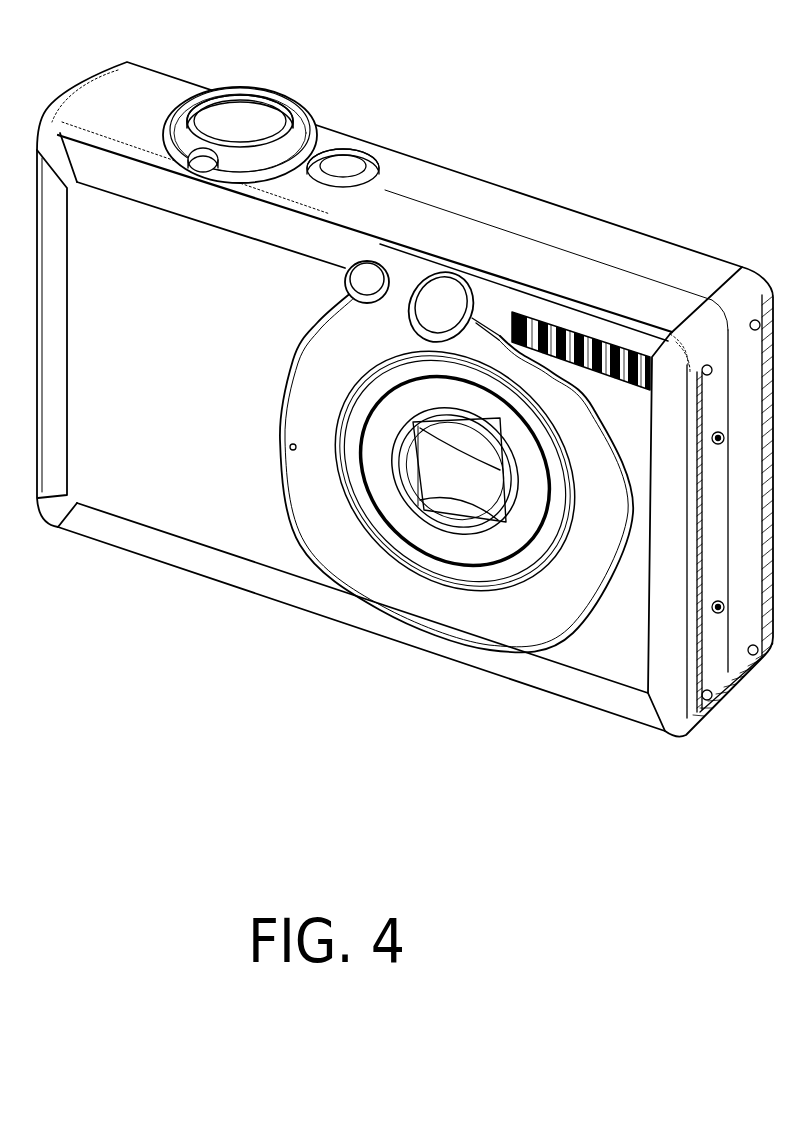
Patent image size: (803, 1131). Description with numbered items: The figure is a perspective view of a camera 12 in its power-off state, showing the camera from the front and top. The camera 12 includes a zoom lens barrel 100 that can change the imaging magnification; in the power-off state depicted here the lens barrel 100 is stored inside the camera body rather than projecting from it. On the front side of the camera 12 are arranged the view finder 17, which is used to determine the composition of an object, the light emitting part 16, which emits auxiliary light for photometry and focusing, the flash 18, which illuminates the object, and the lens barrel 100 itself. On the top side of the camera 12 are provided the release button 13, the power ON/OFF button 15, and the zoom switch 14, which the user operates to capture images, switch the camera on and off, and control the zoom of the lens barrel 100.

The camera 12 is at (205, 533).
The release button 13 is at (235, 113).
The zoom switch 14 is at (293, 112).
The power ON/OFF button 15 is at (344, 168).
The light emitting part 16 is at (367, 278).
The view finder 17 is at (440, 302).
The flash 18 is at (573, 335).
The lens barrel 100 is at (438, 540).